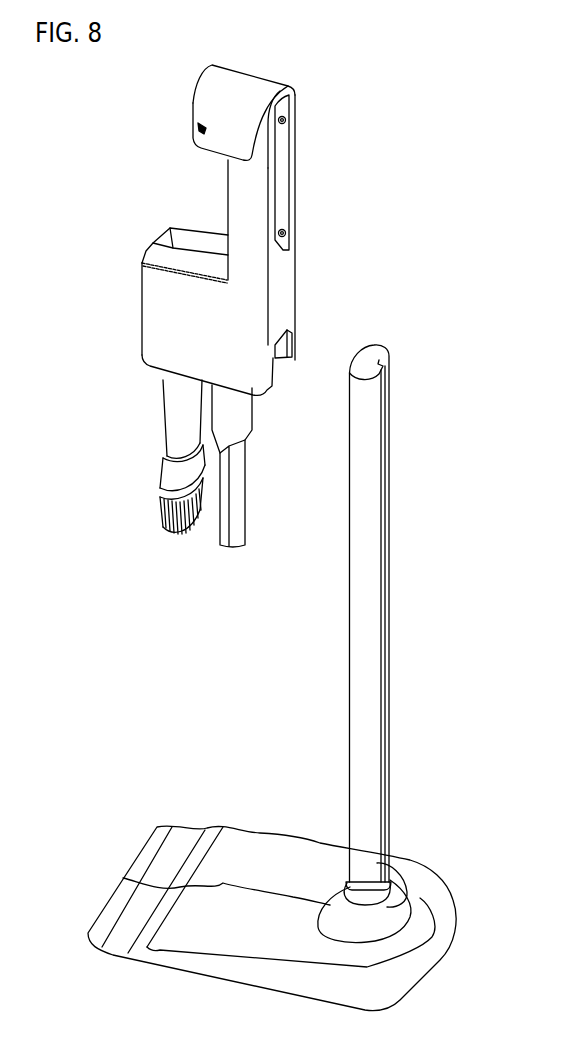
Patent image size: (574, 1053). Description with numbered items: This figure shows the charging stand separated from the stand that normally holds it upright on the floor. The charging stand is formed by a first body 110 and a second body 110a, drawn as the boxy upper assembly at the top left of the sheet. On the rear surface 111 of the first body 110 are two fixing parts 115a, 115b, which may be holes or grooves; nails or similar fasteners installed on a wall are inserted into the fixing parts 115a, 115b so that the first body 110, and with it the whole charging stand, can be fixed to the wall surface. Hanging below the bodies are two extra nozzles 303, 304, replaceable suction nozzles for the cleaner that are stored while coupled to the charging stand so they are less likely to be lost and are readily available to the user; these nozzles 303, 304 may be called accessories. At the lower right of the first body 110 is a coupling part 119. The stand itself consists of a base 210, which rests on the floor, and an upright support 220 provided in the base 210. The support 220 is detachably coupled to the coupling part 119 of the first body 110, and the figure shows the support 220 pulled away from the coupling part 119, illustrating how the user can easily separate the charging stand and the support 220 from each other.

The first body 110 is at (253, 278).
The second body 110a is at (157, 302).
The rear surface 111 is at (287, 179).
The fixing part 115a is at (286, 120).
The fixing part 115b is at (286, 233).
The coupling part 119 is at (280, 350).
The extra nozzle 303 is at (170, 410).
The extra nozzle 304 is at (242, 422).
The support 220 is at (362, 680).
The base 210 is at (243, 857).